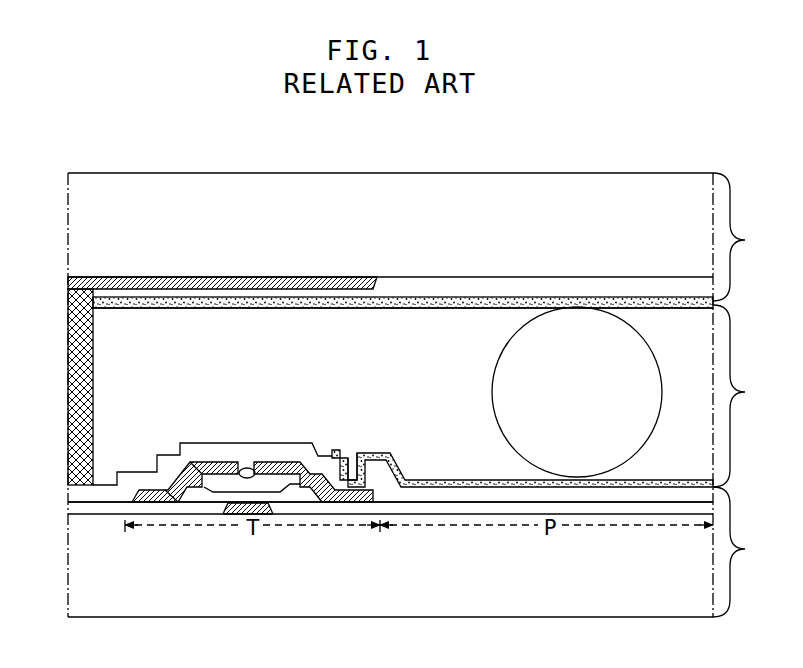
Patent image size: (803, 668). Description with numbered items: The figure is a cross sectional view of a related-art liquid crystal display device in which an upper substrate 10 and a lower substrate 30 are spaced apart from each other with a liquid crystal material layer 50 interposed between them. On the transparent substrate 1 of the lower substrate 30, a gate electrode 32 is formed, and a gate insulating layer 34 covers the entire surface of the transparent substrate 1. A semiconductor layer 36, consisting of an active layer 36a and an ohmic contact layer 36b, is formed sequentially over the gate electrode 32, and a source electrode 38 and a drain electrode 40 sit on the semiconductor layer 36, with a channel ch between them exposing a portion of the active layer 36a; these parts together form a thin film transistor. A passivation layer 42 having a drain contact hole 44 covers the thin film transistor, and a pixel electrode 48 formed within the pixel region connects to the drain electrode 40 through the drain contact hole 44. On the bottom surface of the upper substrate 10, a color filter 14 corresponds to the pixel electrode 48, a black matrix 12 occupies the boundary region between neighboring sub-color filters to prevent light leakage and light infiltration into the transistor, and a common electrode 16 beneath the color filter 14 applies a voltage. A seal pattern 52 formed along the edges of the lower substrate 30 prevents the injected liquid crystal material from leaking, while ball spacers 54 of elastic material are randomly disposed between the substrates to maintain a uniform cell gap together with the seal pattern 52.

The transparent substrate 1 is at (404, 237).
The upper substrate 10 is at (745, 237).
The black matrix 12 is at (262, 277).
The color filter 14 is at (514, 286).
The common electrode 16 is at (470, 309).
The lower substrate 30 is at (745, 552).
The gate electrode 32 is at (272, 516).
The gate insulating layer 34 is at (340, 508).
The semiconductor layer 36 is at (168, 572).
The active layer 36a is at (188, 497).
The ohmic contact layer 36b is at (199, 497).
The source electrode 38 is at (222, 461).
The drain electrode 40 is at (280, 461).
The passivation layer 42 is at (308, 447).
The drain contact hole 44 is at (353, 440).
The pixel electrode 48 is at (470, 480).
The liquid crystal material layer 50 is at (746, 396).
The seal pattern 52 is at (68, 378).
The ball spacer 54 is at (654, 372).
The channel ch is at (250, 466).